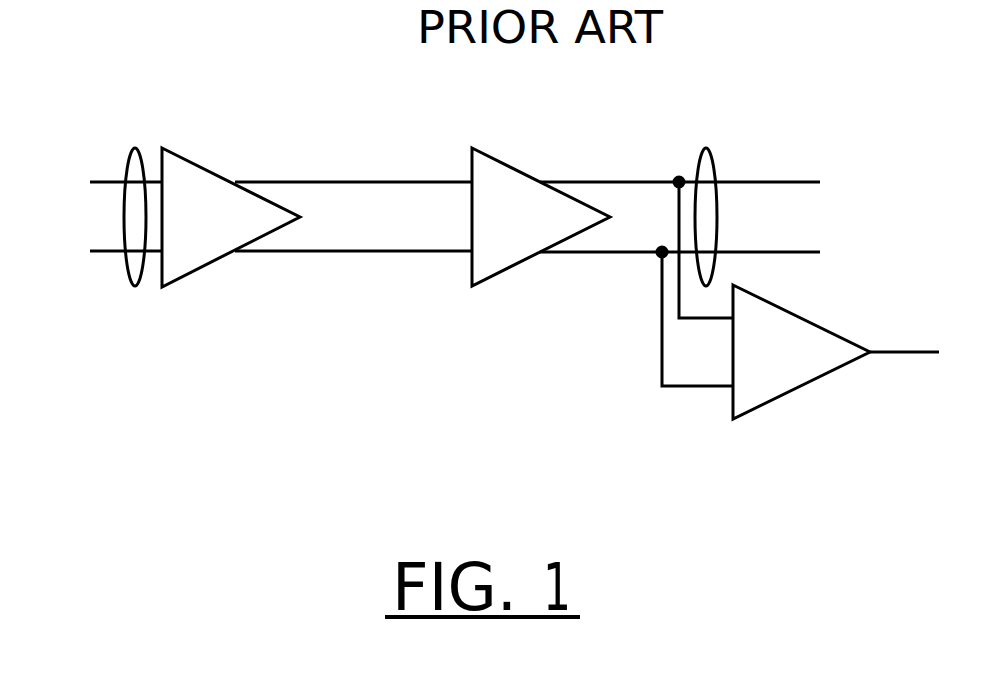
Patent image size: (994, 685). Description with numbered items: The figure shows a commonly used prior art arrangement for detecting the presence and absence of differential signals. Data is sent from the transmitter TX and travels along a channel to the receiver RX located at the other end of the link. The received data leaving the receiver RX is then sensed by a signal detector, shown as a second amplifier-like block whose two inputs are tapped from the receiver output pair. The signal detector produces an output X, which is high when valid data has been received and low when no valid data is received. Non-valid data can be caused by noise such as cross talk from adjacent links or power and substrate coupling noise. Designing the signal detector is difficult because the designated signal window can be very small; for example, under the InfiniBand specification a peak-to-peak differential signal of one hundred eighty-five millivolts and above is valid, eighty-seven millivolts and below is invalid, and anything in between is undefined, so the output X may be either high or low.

The transmitter TX is at (231, 217).
The receiver RX is at (541, 217).
The output X is at (904, 335).